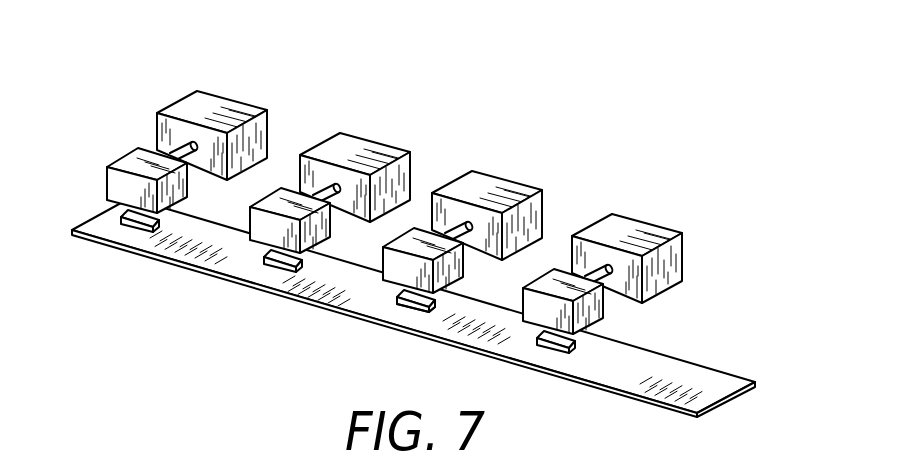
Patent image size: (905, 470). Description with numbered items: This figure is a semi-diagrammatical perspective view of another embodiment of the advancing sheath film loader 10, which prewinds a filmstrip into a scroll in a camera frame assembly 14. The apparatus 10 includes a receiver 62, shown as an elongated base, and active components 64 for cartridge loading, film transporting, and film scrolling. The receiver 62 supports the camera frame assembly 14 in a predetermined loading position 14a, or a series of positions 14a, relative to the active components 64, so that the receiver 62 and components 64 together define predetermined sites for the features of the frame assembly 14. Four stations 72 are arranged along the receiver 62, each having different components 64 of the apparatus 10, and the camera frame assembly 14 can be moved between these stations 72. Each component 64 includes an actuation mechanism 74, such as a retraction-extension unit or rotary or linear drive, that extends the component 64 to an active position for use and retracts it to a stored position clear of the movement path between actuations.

The advancing sheath film loader 10 is at (572, 95).
The receiver 62 is at (710, 368).
The stations 72 is at (224, 89).
The actuation mechanism 74 is at (268, 124).
The active components 64 is at (127, 157).
The camera frame assembly 14 is at (407, 312).
The loading position 14a is at (431, 321).